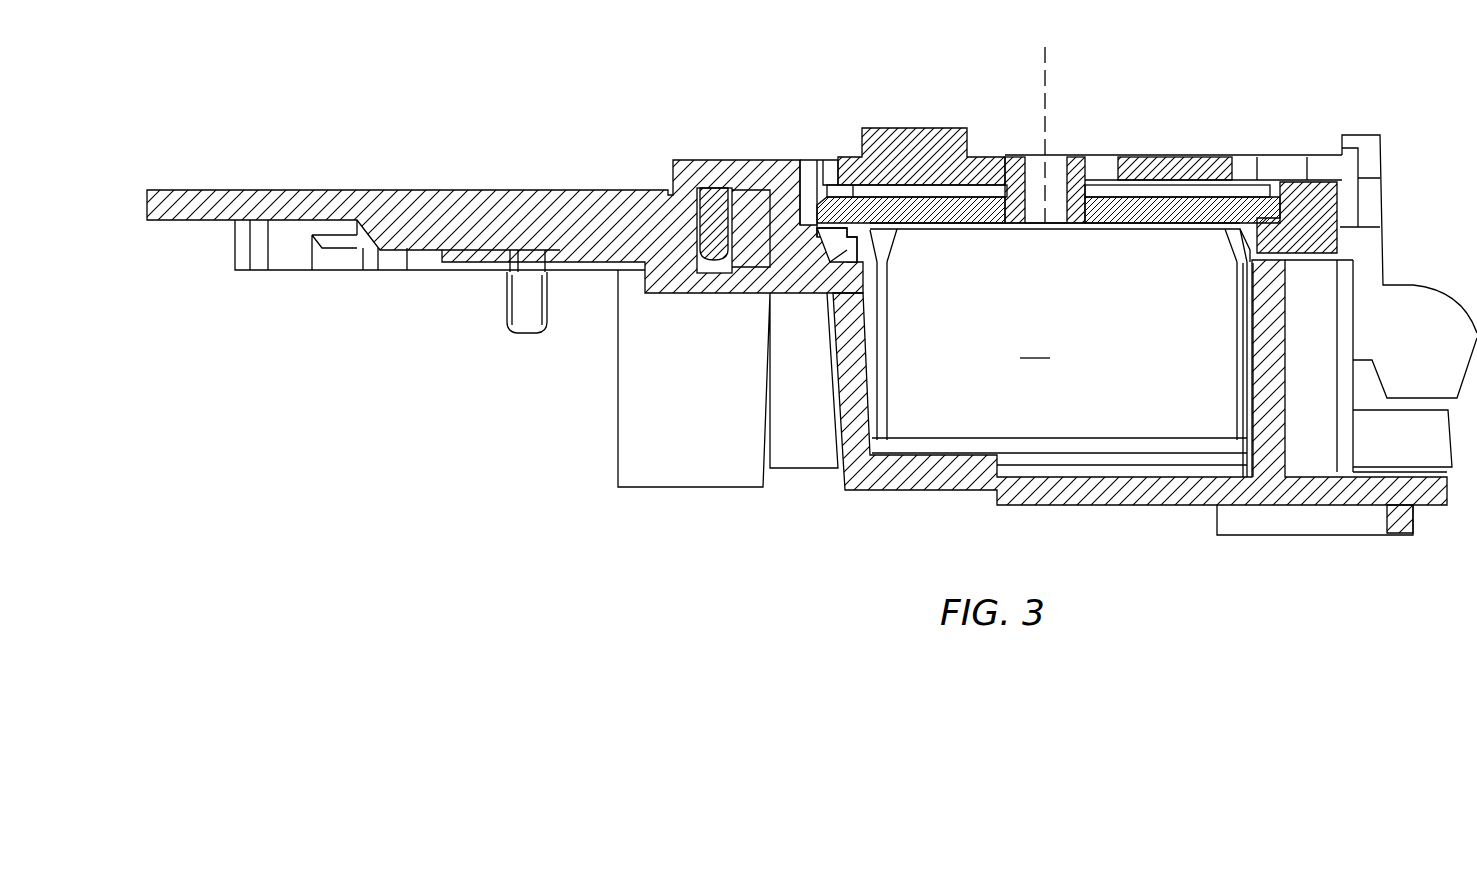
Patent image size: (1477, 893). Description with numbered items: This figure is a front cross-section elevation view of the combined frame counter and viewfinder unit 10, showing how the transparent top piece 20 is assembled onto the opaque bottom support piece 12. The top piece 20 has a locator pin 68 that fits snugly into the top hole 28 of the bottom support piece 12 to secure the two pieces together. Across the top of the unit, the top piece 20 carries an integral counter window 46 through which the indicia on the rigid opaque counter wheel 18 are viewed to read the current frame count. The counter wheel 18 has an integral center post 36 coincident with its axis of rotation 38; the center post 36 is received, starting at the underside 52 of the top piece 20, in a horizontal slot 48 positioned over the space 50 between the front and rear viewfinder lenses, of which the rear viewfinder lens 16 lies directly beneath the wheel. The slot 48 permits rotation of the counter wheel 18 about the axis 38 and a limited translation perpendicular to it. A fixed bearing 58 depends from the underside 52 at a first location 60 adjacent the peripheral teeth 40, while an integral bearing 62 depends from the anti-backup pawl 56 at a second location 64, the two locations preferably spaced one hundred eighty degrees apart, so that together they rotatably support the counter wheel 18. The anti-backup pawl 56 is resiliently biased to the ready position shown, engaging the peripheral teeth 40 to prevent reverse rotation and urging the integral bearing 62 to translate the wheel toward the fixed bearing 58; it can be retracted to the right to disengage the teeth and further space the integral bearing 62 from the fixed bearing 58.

The combined frame counter and viewfinder unit 10 is at (360, 120).
The bottom support piece 12 is at (848, 497).
The rear viewfinder lens 16 is at (1112, 368).
The counter wheel 18 is at (1216, 188).
The top piece 20 is at (696, 154).
The top hole 28 is at (713, 275).
The center post 36 is at (1077, 156).
The axis of rotation 38 is at (1049, 72).
The peripheral teeth 40 is at (1313, 208).
The counter window 46 is at (905, 128).
The horizontal slot 48 is at (998, 158).
The space 50 is at (1050, 243).
The underside 52 is at (1130, 228).
The anti-backup pawl 56 is at (1288, 195).
The fixed bearing 58 is at (855, 232).
The first location 60 is at (816, 197).
The integral bearing 62 is at (1273, 233).
The second location 64 is at (1218, 230).
The locator pin 68 is at (707, 228).